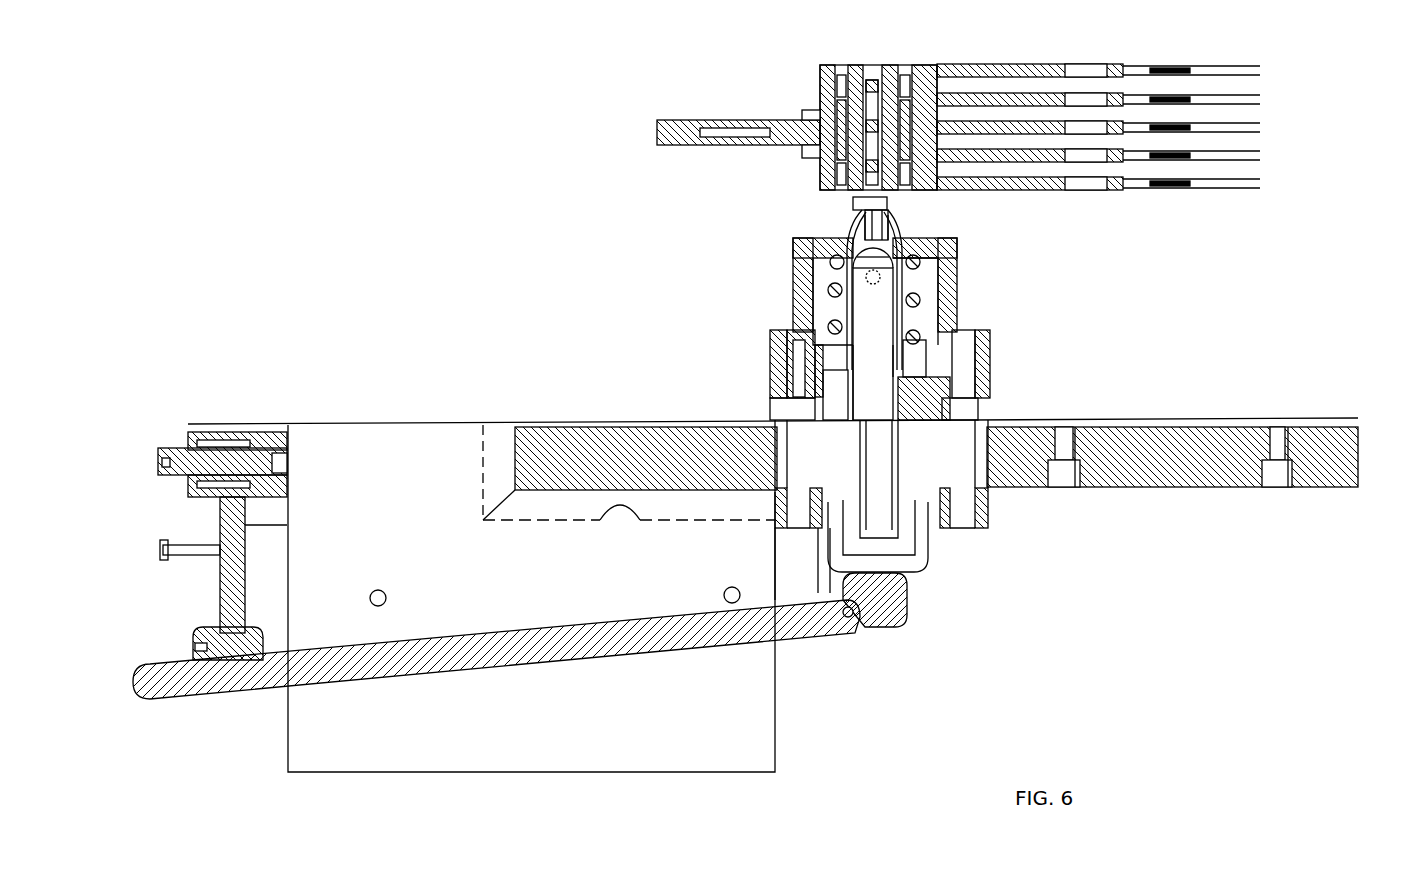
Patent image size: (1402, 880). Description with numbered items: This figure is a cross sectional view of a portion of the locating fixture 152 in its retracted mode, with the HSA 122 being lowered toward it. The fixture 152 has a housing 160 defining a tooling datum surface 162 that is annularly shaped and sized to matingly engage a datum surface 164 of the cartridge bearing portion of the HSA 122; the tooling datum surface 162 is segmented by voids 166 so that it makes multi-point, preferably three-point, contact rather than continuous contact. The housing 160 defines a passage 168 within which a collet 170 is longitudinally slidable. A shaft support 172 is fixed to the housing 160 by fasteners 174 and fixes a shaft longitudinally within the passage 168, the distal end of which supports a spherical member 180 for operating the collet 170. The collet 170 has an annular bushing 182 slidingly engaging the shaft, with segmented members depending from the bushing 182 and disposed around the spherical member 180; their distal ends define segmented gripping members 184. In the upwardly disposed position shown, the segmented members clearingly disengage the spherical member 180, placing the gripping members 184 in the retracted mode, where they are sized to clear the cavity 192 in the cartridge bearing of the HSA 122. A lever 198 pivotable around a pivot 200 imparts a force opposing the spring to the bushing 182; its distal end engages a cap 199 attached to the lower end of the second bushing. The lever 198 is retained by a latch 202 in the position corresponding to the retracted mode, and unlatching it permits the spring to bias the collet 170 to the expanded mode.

The HSA 122 is at (1276, 56).
The locating fixture 152 is at (630, 316).
The housing 160 is at (960, 290).
The tooling datum surface 162 is at (898, 205).
The datum surface 164 is at (858, 192).
The voids 166 is at (905, 192).
The passage 168 is at (822, 305).
The collet 170 is at (905, 318).
The shaft support 172 is at (987, 400).
The fasteners 174 is at (962, 370).
The spherical member 180 is at (875, 262).
The annular bushing 182 is at (775, 342).
The segmented gripping members 184 is at (846, 215).
The cavity 192 is at (822, 118).
The lever 198 is at (500, 668).
The cap 199 is at (915, 565).
The pivot 200 is at (850, 630).
The latch 202 is at (203, 630).